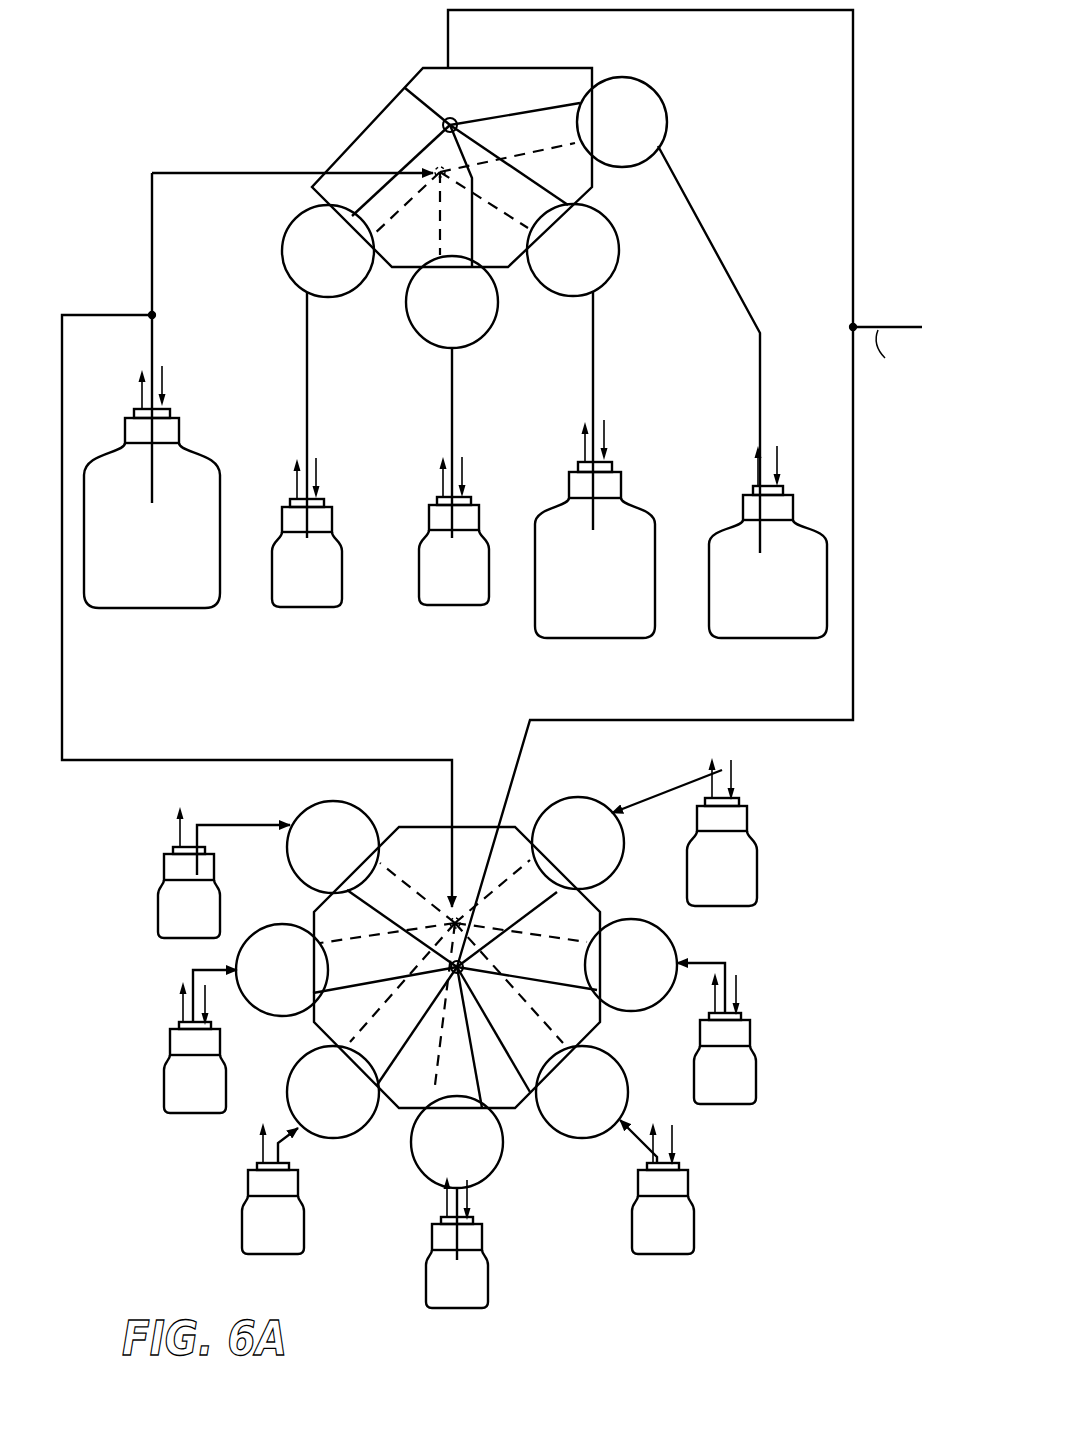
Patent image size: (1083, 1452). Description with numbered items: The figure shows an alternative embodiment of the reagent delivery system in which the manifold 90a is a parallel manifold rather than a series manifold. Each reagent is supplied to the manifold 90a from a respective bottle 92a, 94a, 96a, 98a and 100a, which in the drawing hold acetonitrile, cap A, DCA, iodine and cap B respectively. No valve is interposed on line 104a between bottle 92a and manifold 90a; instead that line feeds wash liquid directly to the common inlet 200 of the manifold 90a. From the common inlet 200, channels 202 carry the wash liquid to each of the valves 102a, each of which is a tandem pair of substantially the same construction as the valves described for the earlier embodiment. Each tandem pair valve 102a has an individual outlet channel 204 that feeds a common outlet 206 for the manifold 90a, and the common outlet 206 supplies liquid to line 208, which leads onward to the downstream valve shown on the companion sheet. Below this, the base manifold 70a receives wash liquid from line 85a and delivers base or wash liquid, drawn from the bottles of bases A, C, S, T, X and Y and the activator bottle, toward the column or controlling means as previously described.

The base manifold 70a is at (530, 1190).
The line 85a is at (234, 757).
The manifold 90a is at (636, 62).
The bottle 92a is at (177, 609).
The bottle 94a is at (318, 609).
The bottle 96a is at (611, 640).
The bottle 98a is at (784, 640).
The bottle 100a is at (448, 609).
The tandem pair valve 102a is at (332, 300).
The line 104a is at (258, 177).
The common inlet 200 is at (427, 165).
The channels 202 is at (433, 228).
The individual outlet channel 204 is at (523, 155).
The common outlet 206 is at (418, 88).
The line 208 is at (851, 228).